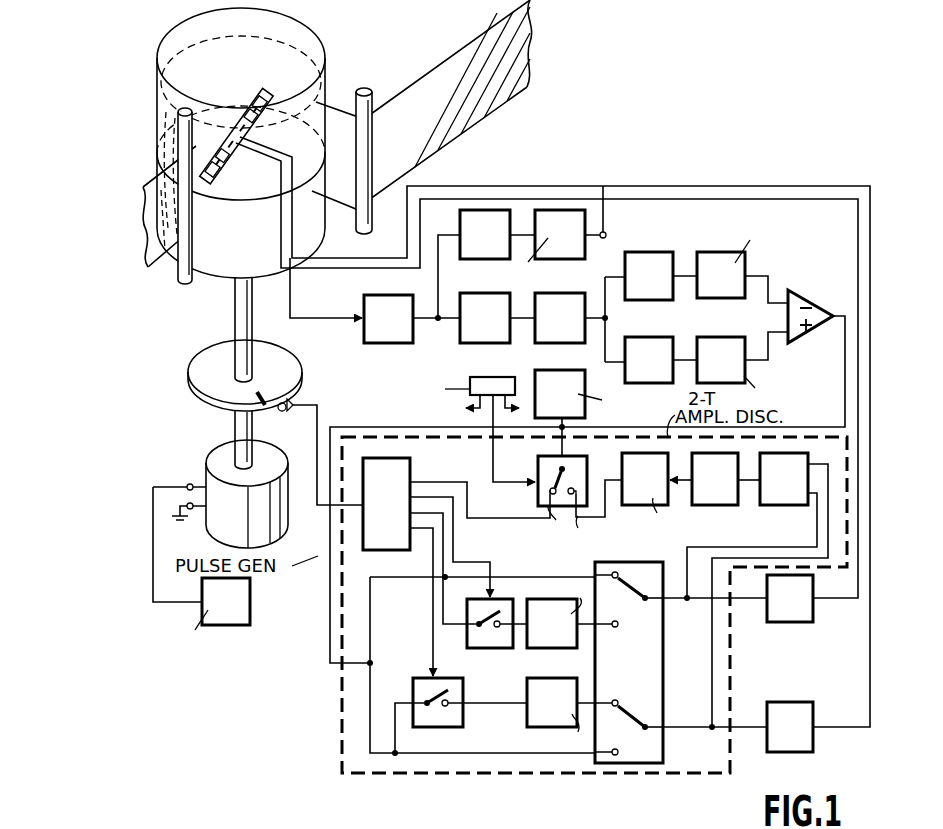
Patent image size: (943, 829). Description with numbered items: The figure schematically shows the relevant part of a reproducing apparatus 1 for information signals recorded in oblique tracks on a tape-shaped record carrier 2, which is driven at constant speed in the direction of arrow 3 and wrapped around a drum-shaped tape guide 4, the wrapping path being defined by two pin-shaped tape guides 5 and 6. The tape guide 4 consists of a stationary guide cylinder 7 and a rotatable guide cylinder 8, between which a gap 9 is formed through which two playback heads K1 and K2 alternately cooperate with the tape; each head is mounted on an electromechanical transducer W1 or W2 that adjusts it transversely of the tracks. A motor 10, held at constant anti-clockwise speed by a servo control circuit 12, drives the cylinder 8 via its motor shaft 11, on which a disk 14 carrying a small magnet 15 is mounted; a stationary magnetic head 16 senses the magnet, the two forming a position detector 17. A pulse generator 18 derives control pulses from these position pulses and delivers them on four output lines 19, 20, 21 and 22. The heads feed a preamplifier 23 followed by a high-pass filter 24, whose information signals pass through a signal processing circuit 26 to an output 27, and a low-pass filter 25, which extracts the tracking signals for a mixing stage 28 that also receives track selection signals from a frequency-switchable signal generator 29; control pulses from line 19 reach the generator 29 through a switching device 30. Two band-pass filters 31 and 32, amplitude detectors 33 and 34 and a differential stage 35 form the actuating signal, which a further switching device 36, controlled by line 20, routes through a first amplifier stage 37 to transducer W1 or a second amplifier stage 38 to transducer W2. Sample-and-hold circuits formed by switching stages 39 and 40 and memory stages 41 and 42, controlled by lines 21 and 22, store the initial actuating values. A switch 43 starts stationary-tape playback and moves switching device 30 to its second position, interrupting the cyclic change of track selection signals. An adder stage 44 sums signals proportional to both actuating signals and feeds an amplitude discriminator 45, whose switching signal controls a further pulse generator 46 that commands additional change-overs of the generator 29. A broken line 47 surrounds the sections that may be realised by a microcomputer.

The reproducing apparatus 1 is at (676, 31).
The record carrier 2 is at (522, 64).
The arrow 3 is at (437, 64).
The drum-shaped tape guide 4 is at (260, 164).
The pin-shaped tape guide 5 is at (372, 102).
The pin-shaped tape guide 6 is at (185, 282).
The stationary guide cylinder 7 is at (215, 263).
The rotatable guide cylinder 8 is at (305, 40).
The gap 9 is at (320, 158).
The motor 10 is at (273, 527).
The motor shaft 11 is at (240, 432).
The servo control circuit 12 is at (250, 601).
The disk 14 is at (210, 372).
The magnet 15 is at (261, 397).
The stationary magnetic head 16 is at (281, 413).
The position detector 17 is at (261, 422).
The pulse generator 18 is at (386, 470).
The output line 19 is at (435, 482).
The output line 20 is at (437, 496).
The output line 21 is at (445, 540).
The output line 22 is at (433, 548).
The preamplifier 23 is at (372, 310).
The high-pass filter 24 is at (478, 220).
The low-pass filter 25 is at (482, 304).
The signal processing circuit 26 is at (552, 220).
The output 27 is at (683, 195).
The mixing stage 28 is at (552, 304).
The signal generator 29 is at (552, 377).
The switching device 30 is at (538, 470).
The band-pass filter 31 is at (645, 263).
The band-pass filter 32 is at (645, 347).
The amplitude detector 33 is at (716, 268).
The amplitude detector 34 is at (716, 352).
The differential stage 35 is at (801, 310).
The switching device 36 is at (648, 667).
The first amplifier stage 37 is at (792, 612).
The second amplifier stage 38 is at (782, 716).
The switching stage 39 is at (479, 642).
The switching stage 40 is at (422, 680).
The memory stage 41 is at (538, 640).
The memory stage 42 is at (530, 712).
The switch 43 is at (472, 384).
The adder stage 44 is at (779, 497).
The amplitude discriminator 45 is at (728, 494).
The further pulse generator 46 is at (640, 498).
The broken line 47 is at (342, 676).
The electromechanical transducer W1 is at (232, 170).
The electromechanical transducer W2 is at (247, 110).
The playback head K1 is at (215, 185).
The playback head K2 is at (258, 98).